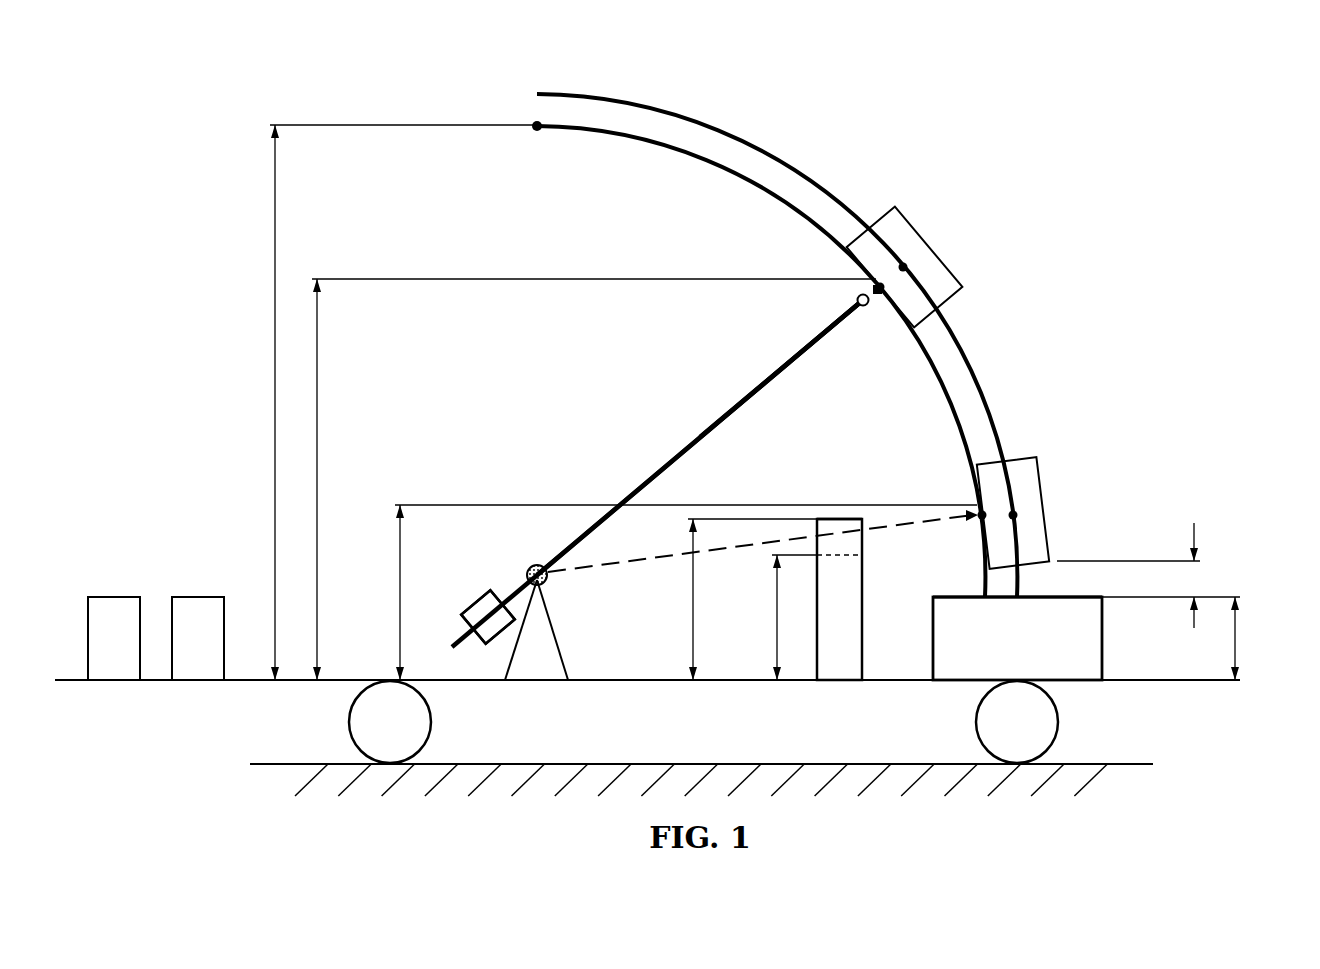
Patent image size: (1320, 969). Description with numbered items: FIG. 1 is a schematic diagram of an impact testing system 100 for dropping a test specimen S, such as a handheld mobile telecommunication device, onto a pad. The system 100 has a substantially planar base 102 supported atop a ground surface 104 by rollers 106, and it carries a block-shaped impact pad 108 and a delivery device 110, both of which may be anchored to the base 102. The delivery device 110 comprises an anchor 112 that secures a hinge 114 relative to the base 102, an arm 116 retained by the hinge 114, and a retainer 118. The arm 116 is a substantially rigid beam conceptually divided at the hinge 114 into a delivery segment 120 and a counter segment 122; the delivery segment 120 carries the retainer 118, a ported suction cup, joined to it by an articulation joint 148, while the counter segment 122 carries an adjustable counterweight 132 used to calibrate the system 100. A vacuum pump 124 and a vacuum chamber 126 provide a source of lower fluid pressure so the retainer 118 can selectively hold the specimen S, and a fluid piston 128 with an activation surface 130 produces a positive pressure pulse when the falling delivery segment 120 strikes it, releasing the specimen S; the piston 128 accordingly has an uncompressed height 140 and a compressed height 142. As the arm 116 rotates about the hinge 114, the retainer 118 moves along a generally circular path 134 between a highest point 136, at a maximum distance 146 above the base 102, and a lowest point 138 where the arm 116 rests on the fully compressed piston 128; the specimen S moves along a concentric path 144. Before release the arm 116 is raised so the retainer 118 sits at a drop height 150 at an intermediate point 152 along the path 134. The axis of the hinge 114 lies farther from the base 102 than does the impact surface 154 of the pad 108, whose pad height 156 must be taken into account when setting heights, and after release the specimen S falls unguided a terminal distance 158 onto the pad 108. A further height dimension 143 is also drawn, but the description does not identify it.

The impact testing system 100 is at (897, 142).
The base 102 is at (1131, 678).
The ground surface 104 is at (690, 762).
The rollers 106 is at (349, 722).
The impact pad 108 is at (998, 647).
The delivery device 110 is at (626, 465).
The anchor 112 is at (556, 637).
The hinge 114 is at (532, 565).
The arm 116 is at (712, 428).
The retainer 118 is at (858, 300).
The delivery segment 120 is at (770, 380).
The counter segment 122 is at (456, 642).
The vacuum pump 124 is at (112, 596).
The vacuum chamber 126 is at (196, 596).
The fluid piston 128 is at (865, 601).
The activation surface 130 is at (842, 518).
The adjustable counterweight 132 is at (466, 598).
The path 134 is at (770, 193).
The highest point 136 is at (534, 124).
The lowest point 138 is at (988, 520).
The uncompressed height 140 is at (693, 600).
The compressed height 142 is at (777, 620).
The pivot height 143 is at (400, 600).
The path 144 is at (744, 140).
The maximum distance 146 is at (275, 402).
The articulation joint 148 is at (866, 306).
The drop height 150 is at (317, 480).
The intermediate point 152 is at (887, 288).
The impact surface 154 is at (965, 597).
The pad height 156 is at (1236, 640).
The terminal distance 158 is at (1194, 535).
The test specimen S is at (917, 225).